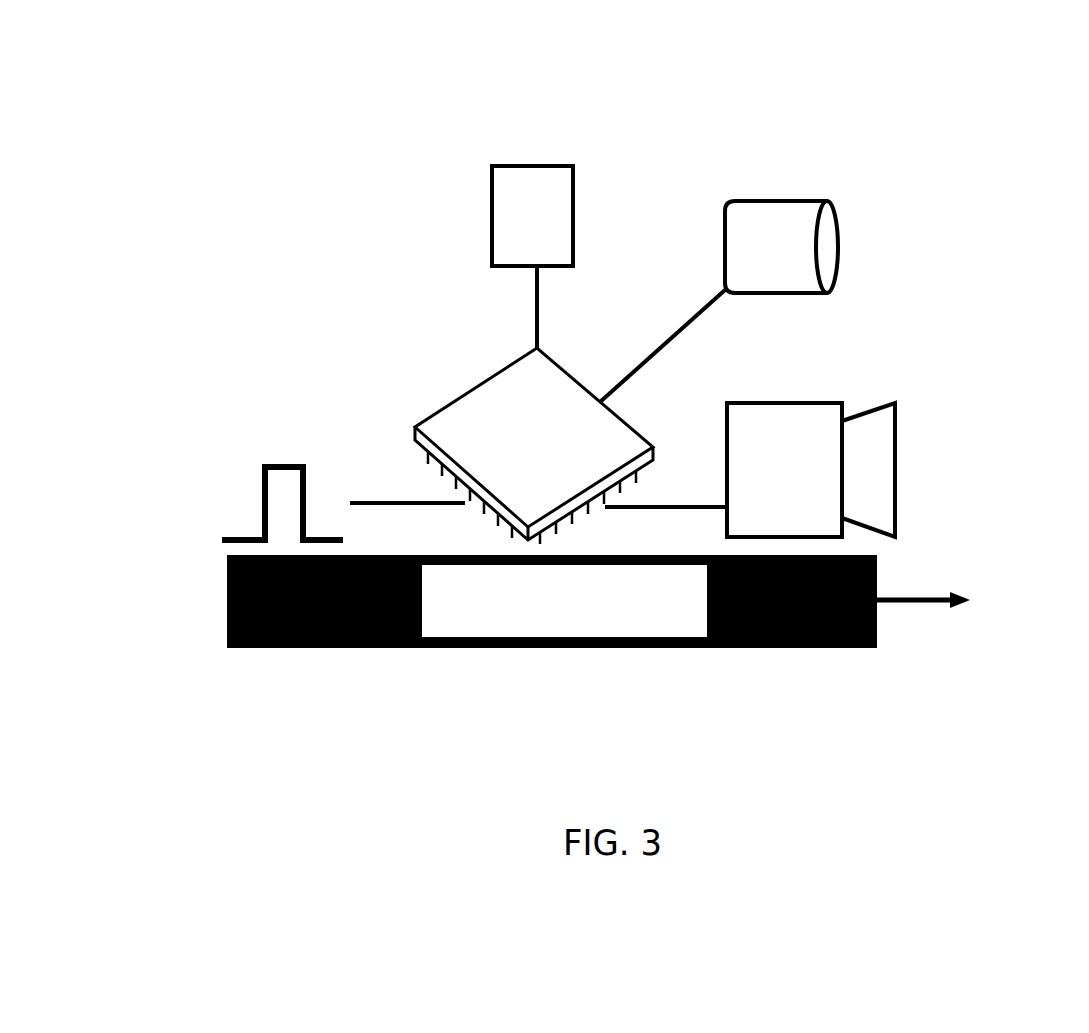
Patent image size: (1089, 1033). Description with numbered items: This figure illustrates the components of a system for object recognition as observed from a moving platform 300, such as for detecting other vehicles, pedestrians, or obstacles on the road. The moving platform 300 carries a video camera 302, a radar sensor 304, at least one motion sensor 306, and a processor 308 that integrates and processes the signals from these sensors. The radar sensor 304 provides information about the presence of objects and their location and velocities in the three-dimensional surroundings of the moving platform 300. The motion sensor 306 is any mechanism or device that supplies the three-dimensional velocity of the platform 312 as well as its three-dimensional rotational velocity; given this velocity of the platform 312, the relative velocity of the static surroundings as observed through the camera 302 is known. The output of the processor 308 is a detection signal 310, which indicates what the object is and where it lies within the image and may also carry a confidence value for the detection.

The moving platform 300 is at (400, 648).
The video camera 302 is at (857, 462).
The radar sensor 304 is at (785, 230).
The motion sensor 306 is at (523, 210).
The processor 308 is at (503, 385).
The detection signal 310 is at (283, 518).
The velocity of the platform 312 is at (888, 603).